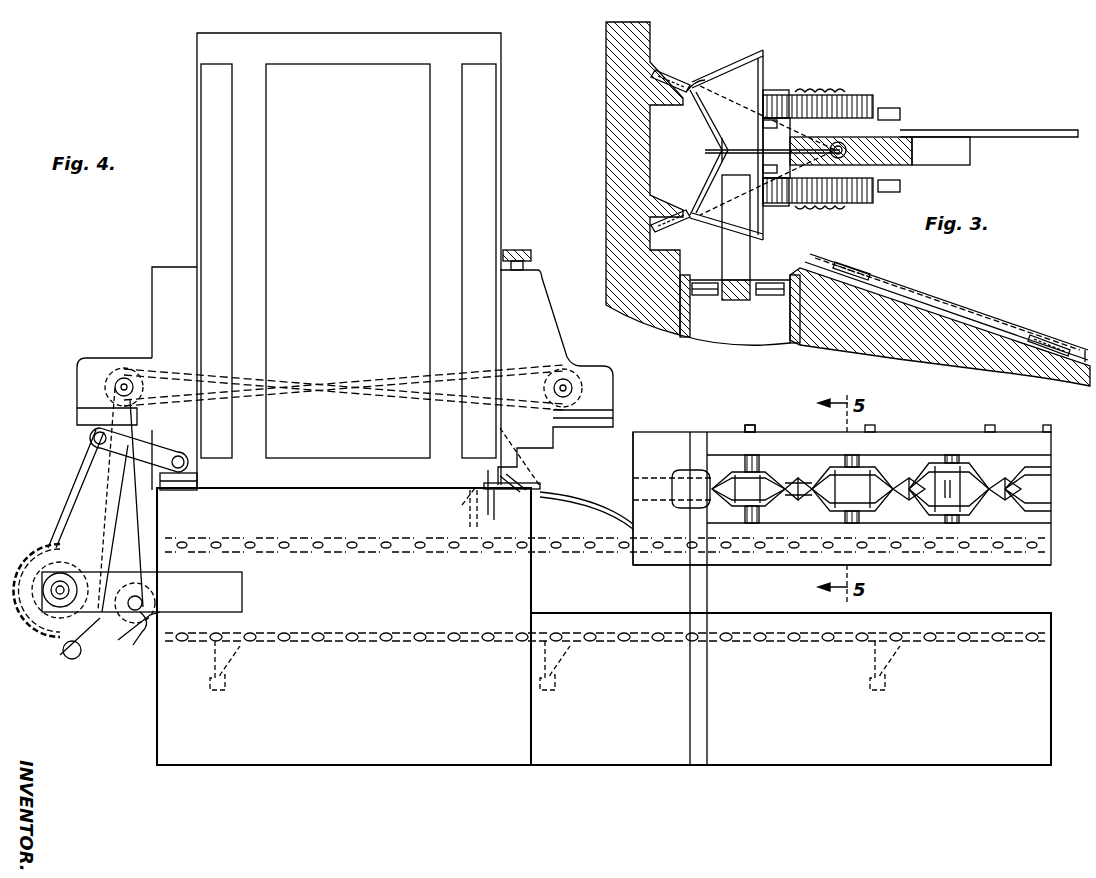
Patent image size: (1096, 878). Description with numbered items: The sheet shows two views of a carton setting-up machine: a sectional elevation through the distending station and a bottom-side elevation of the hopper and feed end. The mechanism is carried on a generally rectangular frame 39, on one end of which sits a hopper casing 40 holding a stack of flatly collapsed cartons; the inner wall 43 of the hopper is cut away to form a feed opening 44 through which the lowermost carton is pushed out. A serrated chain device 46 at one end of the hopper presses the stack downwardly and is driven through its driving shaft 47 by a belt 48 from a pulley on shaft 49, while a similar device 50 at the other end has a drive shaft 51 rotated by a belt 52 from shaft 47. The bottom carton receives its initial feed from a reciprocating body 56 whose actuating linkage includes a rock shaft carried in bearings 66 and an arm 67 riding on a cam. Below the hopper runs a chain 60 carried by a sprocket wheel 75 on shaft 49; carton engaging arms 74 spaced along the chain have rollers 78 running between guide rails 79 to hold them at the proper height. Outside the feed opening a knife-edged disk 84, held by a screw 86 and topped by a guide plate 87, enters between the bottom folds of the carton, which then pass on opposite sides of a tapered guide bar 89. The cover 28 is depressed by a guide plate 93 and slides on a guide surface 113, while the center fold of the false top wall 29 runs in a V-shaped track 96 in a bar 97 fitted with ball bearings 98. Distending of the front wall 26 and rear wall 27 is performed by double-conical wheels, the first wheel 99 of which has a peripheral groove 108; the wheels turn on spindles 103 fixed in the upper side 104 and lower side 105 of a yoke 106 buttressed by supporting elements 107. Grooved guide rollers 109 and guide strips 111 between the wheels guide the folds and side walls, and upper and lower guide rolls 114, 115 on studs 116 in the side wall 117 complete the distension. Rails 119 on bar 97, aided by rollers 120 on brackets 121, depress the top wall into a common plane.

In FIG. 3, the front wall 26 is at (732, 64).
In FIG. 3, the rear wall 27 is at (710, 235).
In FIG. 3, the cover 28 is at (925, 305).
In FIG. 3, the false top wall 29 is at (770, 216).
In FIG. 4, the frame 39 is at (175, 698).
In FIG. 4, the hopper casing 40 is at (197, 245).
In FIG. 4, the inner wall of the hopper 43 is at (499, 236).
In FIG. 4, the feed opening 44 is at (486, 484).
In FIG. 4, the serrated chain device 46 is at (158, 328).
In FIG. 4, the driving shaft 47 is at (122, 380).
In FIG. 4, the belt 48 is at (72, 480).
In FIG. 4, the shaft 49 is at (58, 588).
In FIG. 4, the serrated chain device 50 is at (540, 332).
In FIG. 4, the drive shaft 51 is at (572, 386).
In FIG. 4, the belt 52 is at (413, 380).
In FIG. 4, the reciprocating body 56 is at (190, 466).
In FIG. 4, the chain 60 is at (296, 626).
In FIG. 4, the bearings 66 is at (148, 640).
In FIG. 4, the arm 67 is at (99, 655).
In FIG. 4, the carton engaging arms 74 is at (228, 676).
In FIG. 4, the sprocket wheel 75 is at (60, 636).
In FIG. 3, the rollers 78 is at (712, 300).
In FIG. 3, the guide rails 79 is at (773, 300).
In FIG. 4, the disk 84 is at (500, 490).
In FIG. 4, the screw 86 is at (518, 476).
In FIG. 4, the guide plate 87 is at (495, 514).
In FIG. 4, the tapered guide bar 89 is at (564, 492).
In FIG. 3, the guide plate 93 is at (822, 268).
In FIG. 3, the V-shaped track 96 is at (822, 172).
In FIG. 3, the bar 97 is at (968, 154).
In FIG. 3, the ball bearings 98 is at (846, 146).
In FIG. 4, the first wheel 99 is at (716, 482).
In FIG. 4, the spindles 103 is at (766, 424).
In FIG. 4, the upper side of the yoke 104 is at (872, 432).
In FIG. 4, the lower side of the yoke 105 is at (930, 566).
In FIG. 4, the yoke 106 is at (647, 434).
In FIG. 4, the supporting elements 107 is at (690, 684).
In FIG. 4, the groove 108 is at (715, 505).
In FIG. 4, the guide rollers 109 is at (800, 470).
In FIG. 4, the guide strips 111 is at (872, 466).
In FIG. 3, the guide surface 113 is at (1068, 340).
In FIG. 3, the upper guide rolls 114 is at (666, 66).
In FIG. 3, the lower guide rolls 115 is at (662, 236).
In FIG. 3, the stud 116 is at (672, 78).
In FIG. 3, the side wall 117 is at (606, 110).
In FIG. 3, the rails 119 is at (752, 140).
In FIG. 3, the rollers 120 is at (874, 93).
In FIG. 3, the brackets 121 is at (904, 135).